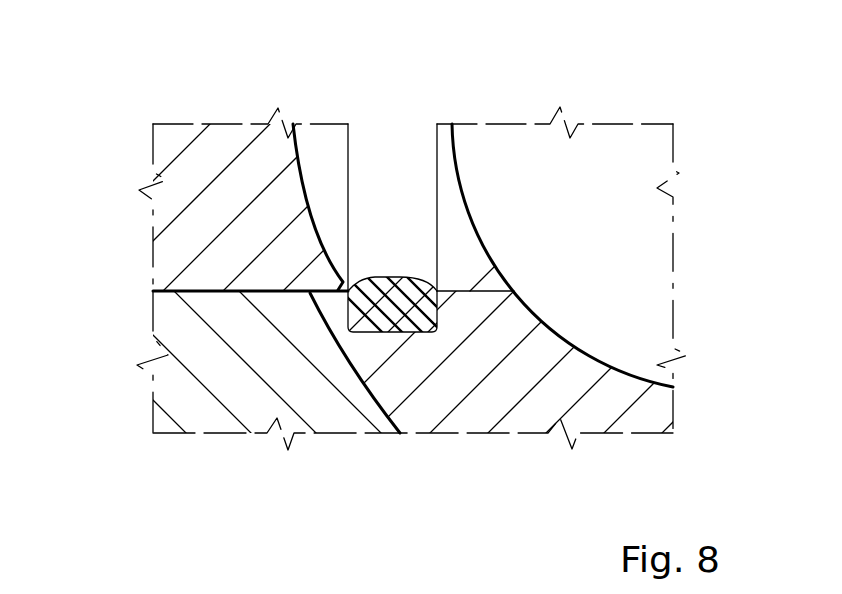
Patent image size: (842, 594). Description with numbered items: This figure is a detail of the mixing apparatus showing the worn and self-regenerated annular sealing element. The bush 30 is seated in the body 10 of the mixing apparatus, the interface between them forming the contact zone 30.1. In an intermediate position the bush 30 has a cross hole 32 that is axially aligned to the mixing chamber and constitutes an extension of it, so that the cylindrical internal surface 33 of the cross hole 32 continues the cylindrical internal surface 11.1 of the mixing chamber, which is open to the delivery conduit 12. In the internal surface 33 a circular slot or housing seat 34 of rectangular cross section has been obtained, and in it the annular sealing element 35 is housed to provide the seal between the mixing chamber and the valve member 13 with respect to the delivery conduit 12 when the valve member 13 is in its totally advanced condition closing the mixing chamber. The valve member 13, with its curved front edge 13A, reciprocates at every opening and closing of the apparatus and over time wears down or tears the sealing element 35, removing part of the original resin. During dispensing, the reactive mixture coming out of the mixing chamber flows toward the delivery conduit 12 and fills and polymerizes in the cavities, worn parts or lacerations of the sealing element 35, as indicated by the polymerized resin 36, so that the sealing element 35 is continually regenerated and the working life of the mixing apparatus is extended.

The body of the mixing apparatus 10 is at (210, 412).
The cylindrical internal surface of the mixing chamber 11.1 is at (263, 292).
The delivery conduit 12 is at (617, 155).
The valve member 13 is at (210, 155).
The curved edge of cover part 13A is at (333, 282).
The bush 30 is at (573, 375).
The contact zone 30.1 is at (383, 340).
The cross hole 32 is at (462, 247).
The cylindrical internal surface of the cross hole 33 is at (485, 287).
The circular housing seat 34 is at (382, 160).
The annular sealing element 35 is at (410, 333).
The polymerized resin filling worn parts of the sealing element 36 is at (350, 330).